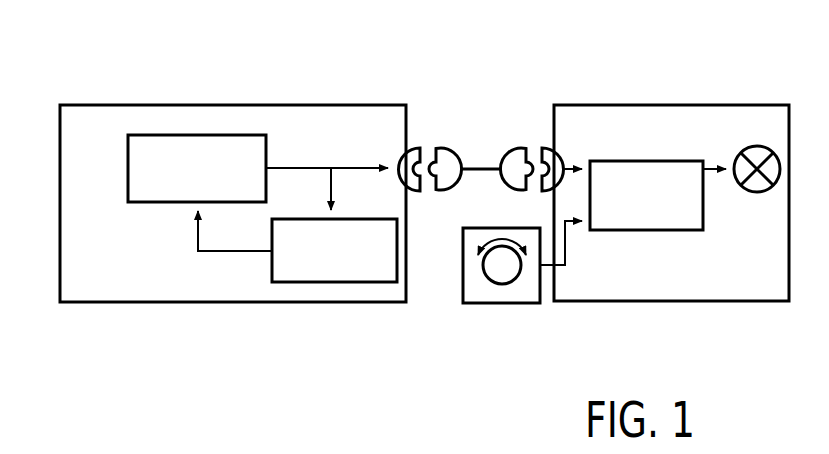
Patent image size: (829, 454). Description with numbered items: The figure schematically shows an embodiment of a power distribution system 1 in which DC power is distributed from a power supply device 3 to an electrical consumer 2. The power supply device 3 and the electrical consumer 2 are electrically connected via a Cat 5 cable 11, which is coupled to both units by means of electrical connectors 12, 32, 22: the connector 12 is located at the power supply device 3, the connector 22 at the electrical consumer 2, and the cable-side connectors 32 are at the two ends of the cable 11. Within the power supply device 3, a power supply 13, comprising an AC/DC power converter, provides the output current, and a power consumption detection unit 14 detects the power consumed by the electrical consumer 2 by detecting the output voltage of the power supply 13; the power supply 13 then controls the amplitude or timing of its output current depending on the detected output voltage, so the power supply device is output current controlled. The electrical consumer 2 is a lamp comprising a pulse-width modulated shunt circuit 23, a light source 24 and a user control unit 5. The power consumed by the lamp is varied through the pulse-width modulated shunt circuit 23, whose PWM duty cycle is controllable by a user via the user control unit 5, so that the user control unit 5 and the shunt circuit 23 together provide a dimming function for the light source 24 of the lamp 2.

The power distribution system 1 is at (498, 14).
The electrical consumer 2 is at (678, 76).
The power supply device 3 is at (311, 76).
The user control unit 5 is at (500, 304).
The Cat 5 cable 11 is at (486, 167).
The electrical connector 12 is at (417, 146).
The power supply 13 is at (190, 141).
The power consumption detection unit 14 is at (327, 283).
The electrical connector 22 is at (562, 146).
The pulse-width modulated shunt circuit 23 is at (668, 231).
The light source 24 is at (757, 146).
The electrical connector 32 is at (445, 148).